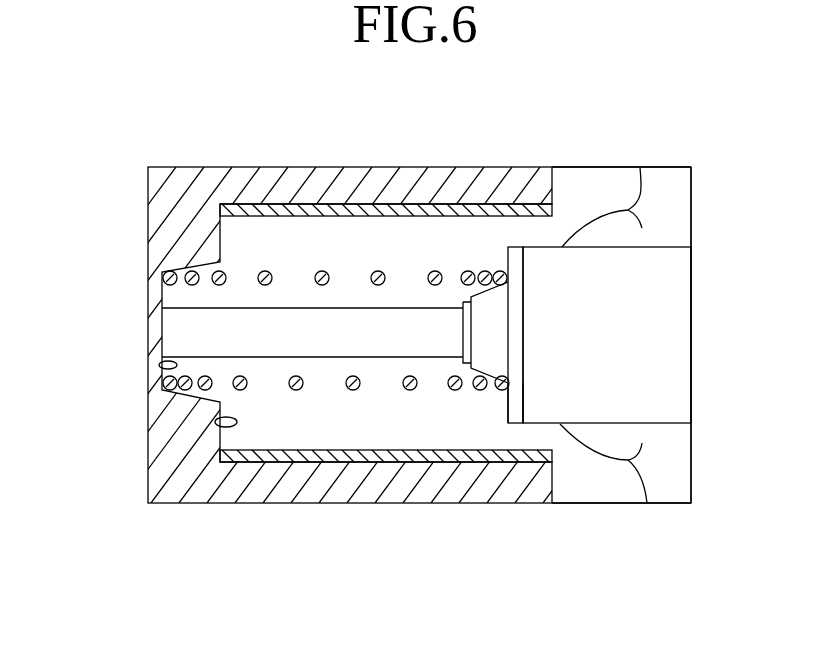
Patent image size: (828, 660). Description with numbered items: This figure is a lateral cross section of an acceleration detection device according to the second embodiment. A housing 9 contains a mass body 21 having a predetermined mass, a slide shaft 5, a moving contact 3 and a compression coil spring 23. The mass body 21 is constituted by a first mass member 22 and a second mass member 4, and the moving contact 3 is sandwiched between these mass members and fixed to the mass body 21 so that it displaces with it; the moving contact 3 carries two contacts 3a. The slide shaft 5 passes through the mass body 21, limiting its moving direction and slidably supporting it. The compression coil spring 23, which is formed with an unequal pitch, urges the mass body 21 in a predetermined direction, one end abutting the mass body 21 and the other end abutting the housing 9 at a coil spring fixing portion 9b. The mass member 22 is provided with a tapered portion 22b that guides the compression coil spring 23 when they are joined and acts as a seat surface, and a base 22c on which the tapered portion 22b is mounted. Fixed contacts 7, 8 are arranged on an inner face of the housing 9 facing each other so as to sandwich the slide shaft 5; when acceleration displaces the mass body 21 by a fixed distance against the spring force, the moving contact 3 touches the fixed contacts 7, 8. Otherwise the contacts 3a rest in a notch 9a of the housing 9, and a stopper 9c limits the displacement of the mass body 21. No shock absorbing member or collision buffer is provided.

The housing 9 is at (180, 177).
The notch 9a is at (583, 187).
The coil spring fixing portion 9b is at (160, 367).
The stopper 9c is at (215, 422).
The fixed contact 7 is at (257, 204).
The fixed contact 8 is at (270, 448).
The compression coil spring 23 is at (323, 271).
The slide shaft 5 is at (397, 323).
The first mass member 22 is at (517, 260).
The tapered portion 22b is at (487, 307).
The base 22c is at (518, 410).
The second mass member 4 is at (680, 298).
The mass body 21 is at (673, 366).
The moving contact 3 is at (603, 462).
The contacts 3a is at (640, 167).